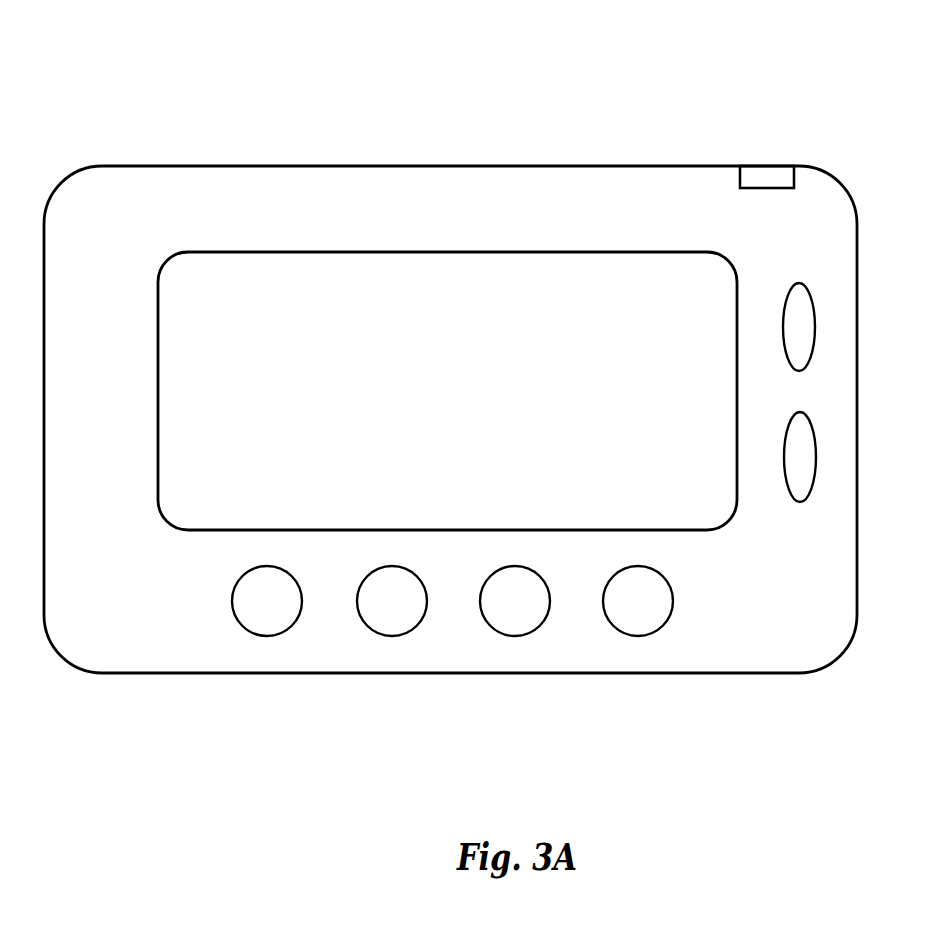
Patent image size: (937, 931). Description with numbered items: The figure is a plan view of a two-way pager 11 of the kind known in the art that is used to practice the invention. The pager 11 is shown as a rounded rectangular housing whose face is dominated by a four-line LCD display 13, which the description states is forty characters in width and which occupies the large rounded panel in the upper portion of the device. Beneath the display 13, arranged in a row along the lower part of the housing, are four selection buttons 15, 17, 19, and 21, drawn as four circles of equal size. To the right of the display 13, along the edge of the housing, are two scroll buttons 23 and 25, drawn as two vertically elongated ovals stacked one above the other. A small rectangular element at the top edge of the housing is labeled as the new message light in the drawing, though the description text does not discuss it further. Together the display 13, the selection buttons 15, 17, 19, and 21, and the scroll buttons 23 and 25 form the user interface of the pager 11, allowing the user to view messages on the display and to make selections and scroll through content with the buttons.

The two-way pager 11 is at (300, 86).
The four-line LCD display 13 is at (478, 400).
The selection button 15 is at (232, 598).
The selection button 17 is at (357, 598).
The selection button 19 is at (480, 598).
The selection button 21 is at (603, 598).
The scroll button 23 is at (816, 328).
The scroll button 25 is at (818, 463).
The new message light is at (768, 175).